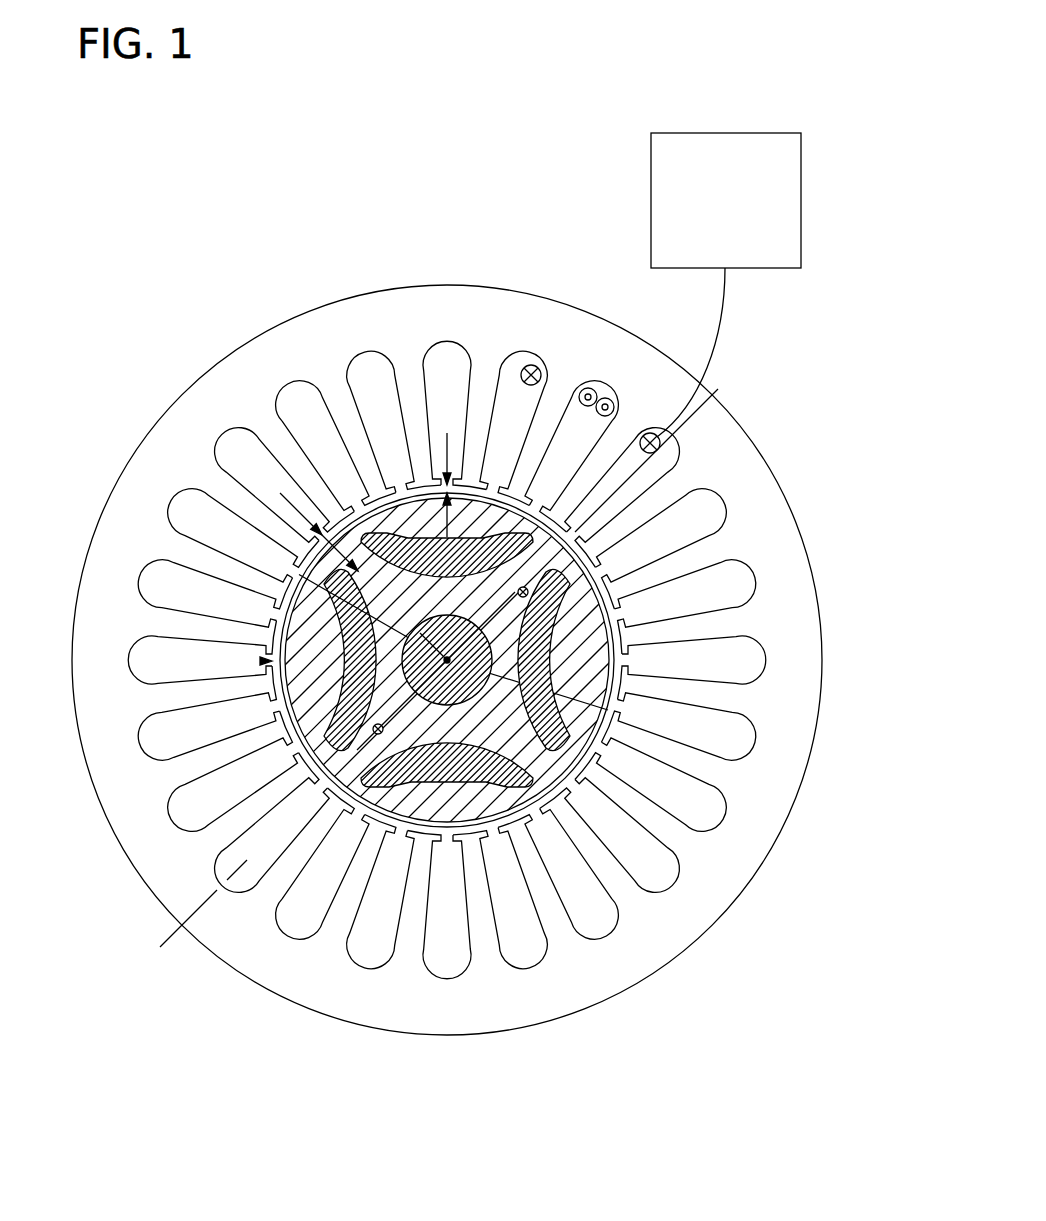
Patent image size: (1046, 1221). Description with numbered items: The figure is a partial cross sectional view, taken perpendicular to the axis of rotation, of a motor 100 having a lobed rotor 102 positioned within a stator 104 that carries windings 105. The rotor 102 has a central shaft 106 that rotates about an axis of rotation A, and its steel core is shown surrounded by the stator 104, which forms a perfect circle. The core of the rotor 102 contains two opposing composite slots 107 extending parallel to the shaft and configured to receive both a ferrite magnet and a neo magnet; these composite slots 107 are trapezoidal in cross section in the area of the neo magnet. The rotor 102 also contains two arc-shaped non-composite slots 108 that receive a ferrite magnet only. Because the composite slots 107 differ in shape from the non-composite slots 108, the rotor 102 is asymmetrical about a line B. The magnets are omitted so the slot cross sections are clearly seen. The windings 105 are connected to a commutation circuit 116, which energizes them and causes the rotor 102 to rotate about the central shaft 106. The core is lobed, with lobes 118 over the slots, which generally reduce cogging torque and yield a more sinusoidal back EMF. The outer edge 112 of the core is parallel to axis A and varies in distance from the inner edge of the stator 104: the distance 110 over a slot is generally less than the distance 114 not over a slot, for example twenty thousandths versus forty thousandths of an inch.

The motor 100 is at (200, 259).
The rotor 102 is at (445, 813).
The stator 104 is at (601, 575).
The windings 105 is at (605, 398).
The central shaft 106 is at (608, 710).
The composite slots 107 is at (452, 533).
The non-composite slots 108 is at (358, 705).
The distance over a slot 110 is at (447, 433).
The outer edge 112 is at (517, 522).
The distance not over a slot 114 is at (262, 504).
The commutation circuit 116 is at (714, 133).
The lobes 118 is at (260, 661).
The axis of rotation A is at (293, 506).
The line of asymmetry B is at (165, 942).